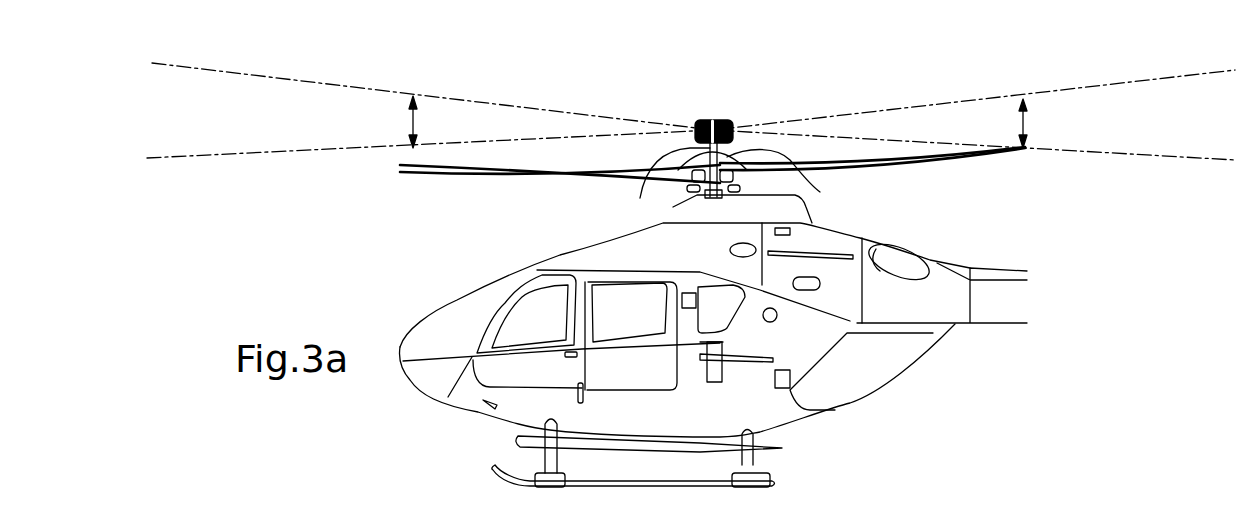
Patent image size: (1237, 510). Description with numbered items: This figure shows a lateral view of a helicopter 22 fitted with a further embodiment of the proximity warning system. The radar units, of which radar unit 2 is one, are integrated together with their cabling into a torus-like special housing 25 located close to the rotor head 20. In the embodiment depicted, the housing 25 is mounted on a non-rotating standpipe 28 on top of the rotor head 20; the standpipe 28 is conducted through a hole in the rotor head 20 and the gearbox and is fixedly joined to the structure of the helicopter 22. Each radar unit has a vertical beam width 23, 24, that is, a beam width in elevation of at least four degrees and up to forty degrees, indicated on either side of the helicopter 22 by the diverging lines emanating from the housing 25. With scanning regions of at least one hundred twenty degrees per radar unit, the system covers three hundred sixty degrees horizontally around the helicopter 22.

The radar unit 2 is at (723, 119).
The rotor head 20 is at (727, 162).
The helicopter 22 is at (457, 313).
The vertical beam width 23 is at (410, 121).
The vertical beam width 24 is at (1026, 121).
The housing 25 is at (713, 120).
The standpipe 28 is at (650, 190).